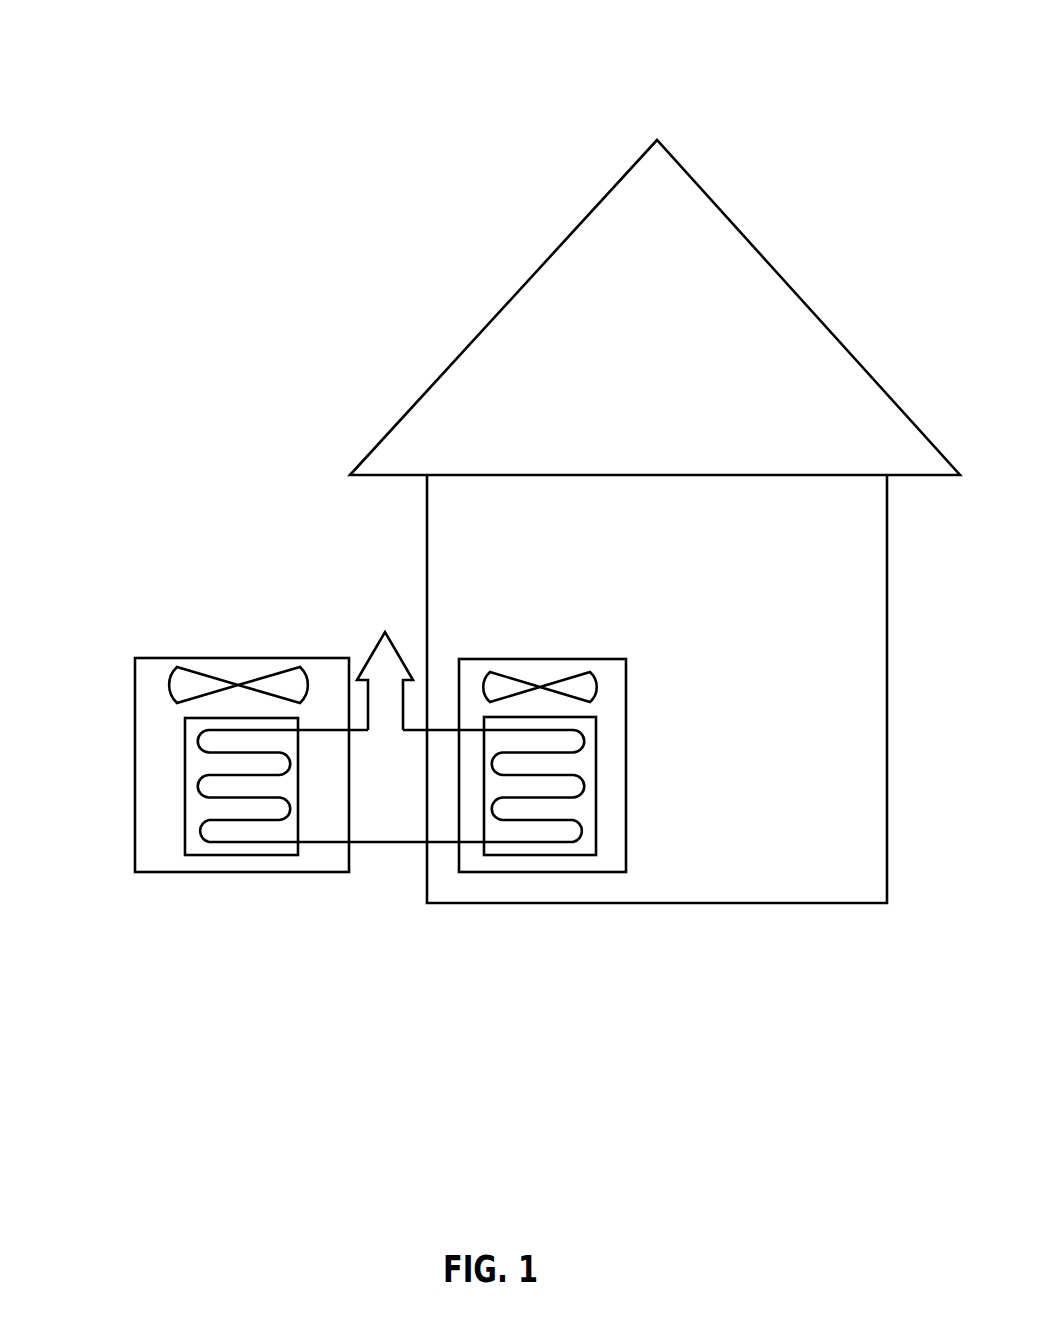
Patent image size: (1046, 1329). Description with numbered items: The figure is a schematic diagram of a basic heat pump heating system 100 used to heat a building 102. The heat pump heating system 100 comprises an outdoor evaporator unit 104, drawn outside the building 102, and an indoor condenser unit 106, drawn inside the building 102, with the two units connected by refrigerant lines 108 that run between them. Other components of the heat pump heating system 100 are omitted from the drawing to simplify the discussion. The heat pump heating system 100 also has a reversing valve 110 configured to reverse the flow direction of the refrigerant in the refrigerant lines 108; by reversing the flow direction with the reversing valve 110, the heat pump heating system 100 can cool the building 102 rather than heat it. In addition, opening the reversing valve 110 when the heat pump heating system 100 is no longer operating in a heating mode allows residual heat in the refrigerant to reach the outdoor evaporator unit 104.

The heat pump heating system 100 is at (150, 40).
The building 102 is at (480, 335).
The outdoor evaporator unit 104 is at (135, 722).
The indoor condenser unit 106 is at (590, 658).
The refrigerant lines 108 is at (362, 730).
The reversing valve 110 is at (373, 652).